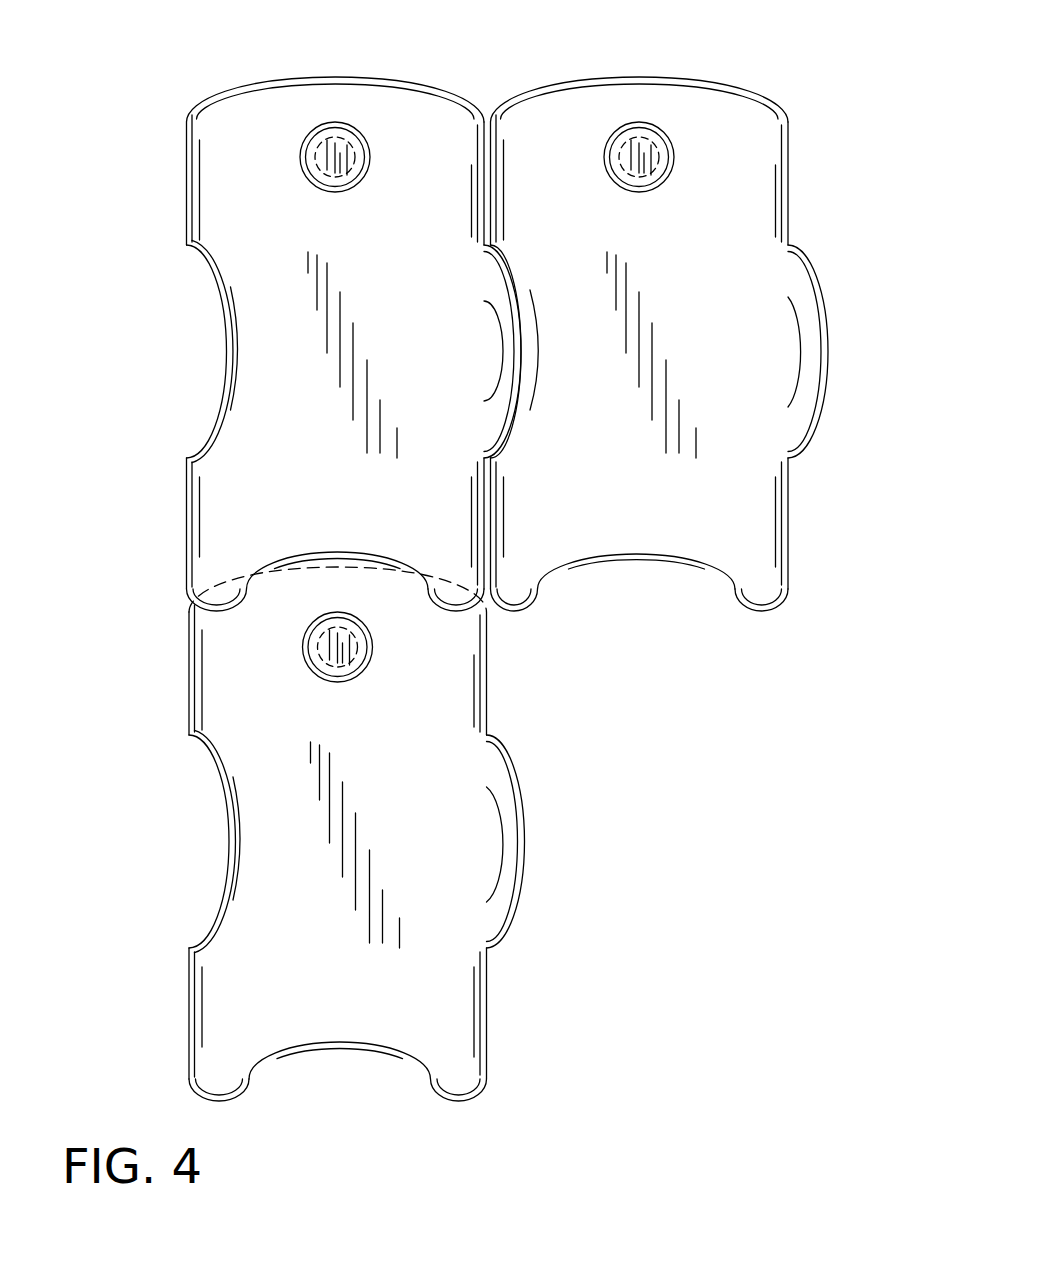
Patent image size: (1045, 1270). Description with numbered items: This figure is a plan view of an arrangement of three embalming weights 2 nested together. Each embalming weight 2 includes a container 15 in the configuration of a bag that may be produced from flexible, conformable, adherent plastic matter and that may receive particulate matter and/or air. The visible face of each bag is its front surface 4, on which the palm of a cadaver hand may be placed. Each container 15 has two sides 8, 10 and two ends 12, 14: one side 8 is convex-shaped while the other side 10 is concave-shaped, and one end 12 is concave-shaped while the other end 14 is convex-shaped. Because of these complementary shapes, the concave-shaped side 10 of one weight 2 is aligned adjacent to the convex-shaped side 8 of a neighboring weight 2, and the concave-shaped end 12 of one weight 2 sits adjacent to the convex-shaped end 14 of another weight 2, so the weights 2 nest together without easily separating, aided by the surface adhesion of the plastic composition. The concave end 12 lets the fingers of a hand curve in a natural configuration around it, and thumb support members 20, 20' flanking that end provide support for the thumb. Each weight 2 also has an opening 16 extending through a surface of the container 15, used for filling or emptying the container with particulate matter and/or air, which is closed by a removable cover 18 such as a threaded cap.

The embalming weight 2 is at (492, 574).
The front surface 4 is at (313, 235).
The side 8 is at (500, 347).
The side 10 is at (222, 380).
The end 12 is at (668, 571).
The end 14 is at (326, 79).
The container 15 is at (168, 305).
The opening 16 is at (305, 152).
The removable cover 18 is at (367, 142).
The thumb support member 20 is at (314, 843).
The thumb support member 20' is at (658, 843).